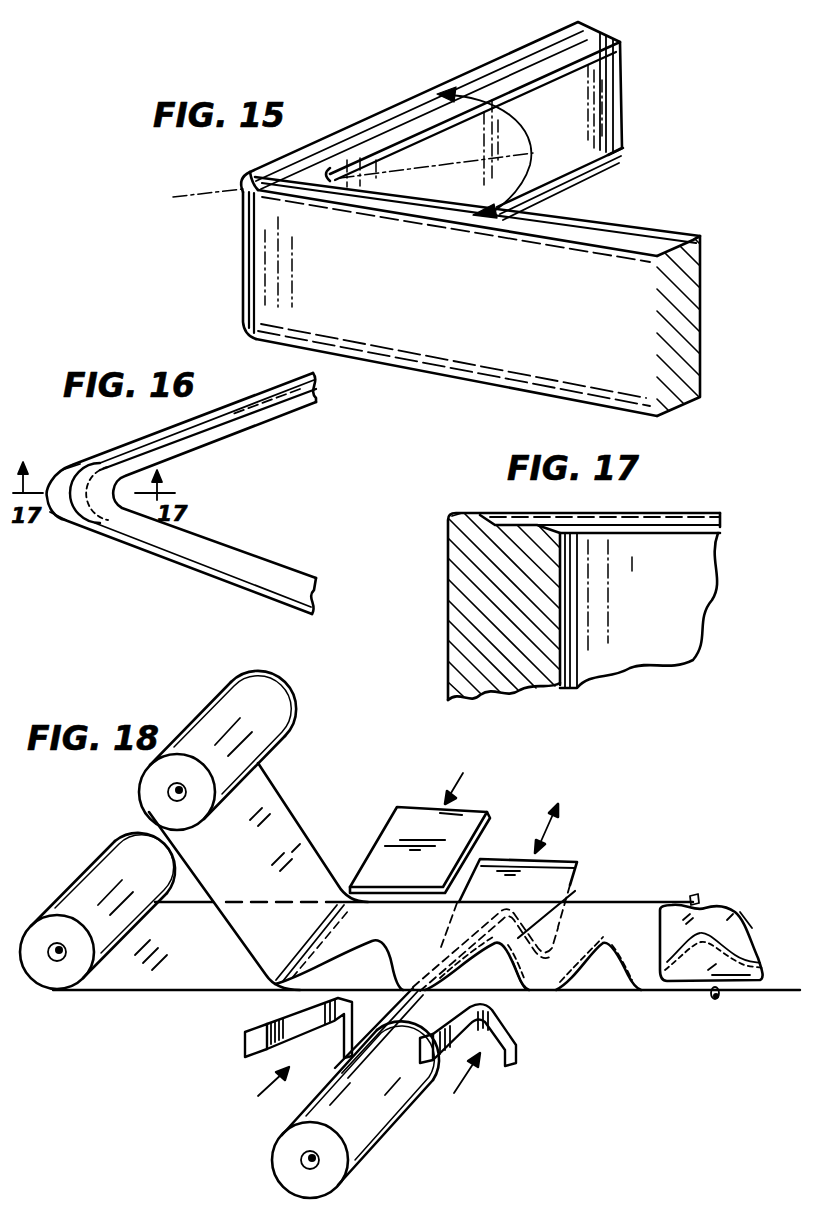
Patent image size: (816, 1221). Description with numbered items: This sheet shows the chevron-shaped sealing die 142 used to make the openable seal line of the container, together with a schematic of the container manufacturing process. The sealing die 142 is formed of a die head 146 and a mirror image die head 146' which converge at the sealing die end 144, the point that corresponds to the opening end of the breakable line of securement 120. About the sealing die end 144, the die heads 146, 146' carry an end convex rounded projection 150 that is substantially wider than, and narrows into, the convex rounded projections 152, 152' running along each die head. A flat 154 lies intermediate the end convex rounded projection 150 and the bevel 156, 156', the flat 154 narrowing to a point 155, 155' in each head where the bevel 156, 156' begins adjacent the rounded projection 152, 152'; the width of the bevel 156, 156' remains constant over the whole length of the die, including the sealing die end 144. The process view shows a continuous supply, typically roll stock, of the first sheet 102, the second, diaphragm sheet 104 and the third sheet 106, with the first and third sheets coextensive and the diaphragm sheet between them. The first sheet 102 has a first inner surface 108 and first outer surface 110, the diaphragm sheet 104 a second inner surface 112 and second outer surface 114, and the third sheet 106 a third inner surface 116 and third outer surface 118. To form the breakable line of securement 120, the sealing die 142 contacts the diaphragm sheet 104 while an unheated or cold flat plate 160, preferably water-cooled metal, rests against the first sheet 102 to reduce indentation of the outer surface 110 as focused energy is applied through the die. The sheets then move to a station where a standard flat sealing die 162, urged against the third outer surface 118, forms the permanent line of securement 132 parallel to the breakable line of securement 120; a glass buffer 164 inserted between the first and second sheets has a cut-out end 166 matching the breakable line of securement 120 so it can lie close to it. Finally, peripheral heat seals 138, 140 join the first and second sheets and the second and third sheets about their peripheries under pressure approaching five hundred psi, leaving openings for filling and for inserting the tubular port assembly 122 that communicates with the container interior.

In FIG. 18, the first sheet 102 is at (263, 789).
In FIG. 18, the second, diaphragm sheet 104 is at (110, 973).
In FIG. 18, the third sheet 106 is at (377, 1117).
In FIG. 18, the first inner surface 108 is at (197, 890).
In FIG. 18, the first outer surface 110 is at (293, 873).
In FIG. 18, the second inner surface 112 is at (199, 972).
In FIG. 18, the second outer surface 114 is at (230, 973).
In FIG. 18, the third inner surface 116 is at (400, 1005).
In FIG. 18, the third outer surface 118 is at (381, 1017).
In FIG. 18, the breakable line of securement 120 is at (293, 992).
In FIG. 18, the tubular port assembly 122 is at (697, 900).
In FIG. 18, the permanent line of securement 132 is at (527, 962).
In FIG. 18, the peripheral heat seal 138 is at (760, 933).
In FIG. 18, the peripheral heat seal 140 is at (743, 971).
In FIG. 18, the sealing die 142 is at (260, 1051).
In FIG. 15, the sealing die end 144 is at (243, 243).
In FIG. 16, the sealing die end 144 is at (57, 503).
In FIG. 15, the die head 146 is at (471, 296).
In FIG. 15, the mirror image die head 146' is at (463, 104).
In FIG. 17, the mirror image die head 146' is at (653, 600).
In FIG. 15, the end convex rounded projection 150 is at (245, 182).
In FIG. 16, the end convex rounded projection 150 is at (66, 466).
In FIG. 17, the end convex rounded projection 150 is at (458, 513).
In FIG. 15, the convex rounded projection 152 is at (454, 301).
In FIG. 16, the convex rounded projection 152 is at (203, 572).
In FIG. 15, the convex rounded projection 152' is at (439, 125).
In FIG. 16, the convex rounded projection 152' is at (207, 417).
In FIG. 17, the convex rounded projection 152' is at (605, 508).
In FIG. 16, the flat 154 is at (78, 515).
In FIG. 17, the flat 154 is at (477, 537).
In FIG. 16, the point 155 is at (99, 542).
In FIG. 16, the point 155' is at (111, 454).
In FIG. 15, the bevel 156 is at (479, 213).
In FIG. 16, the bevel 156 is at (181, 493).
In FIG. 15, the bevel 156' is at (506, 113).
In FIG. 16, the bevel 156' is at (208, 429).
In FIG. 17, the bevel 156' is at (650, 551).
In FIG. 18, the unheated or cold flat plate 160 is at (428, 812).
In FIG. 18, the standard flat sealing die 162 is at (497, 1057).
In FIG. 18, the glass buffer 164 is at (560, 866).
In FIG. 18, the cut-out end 166 is at (575, 891).